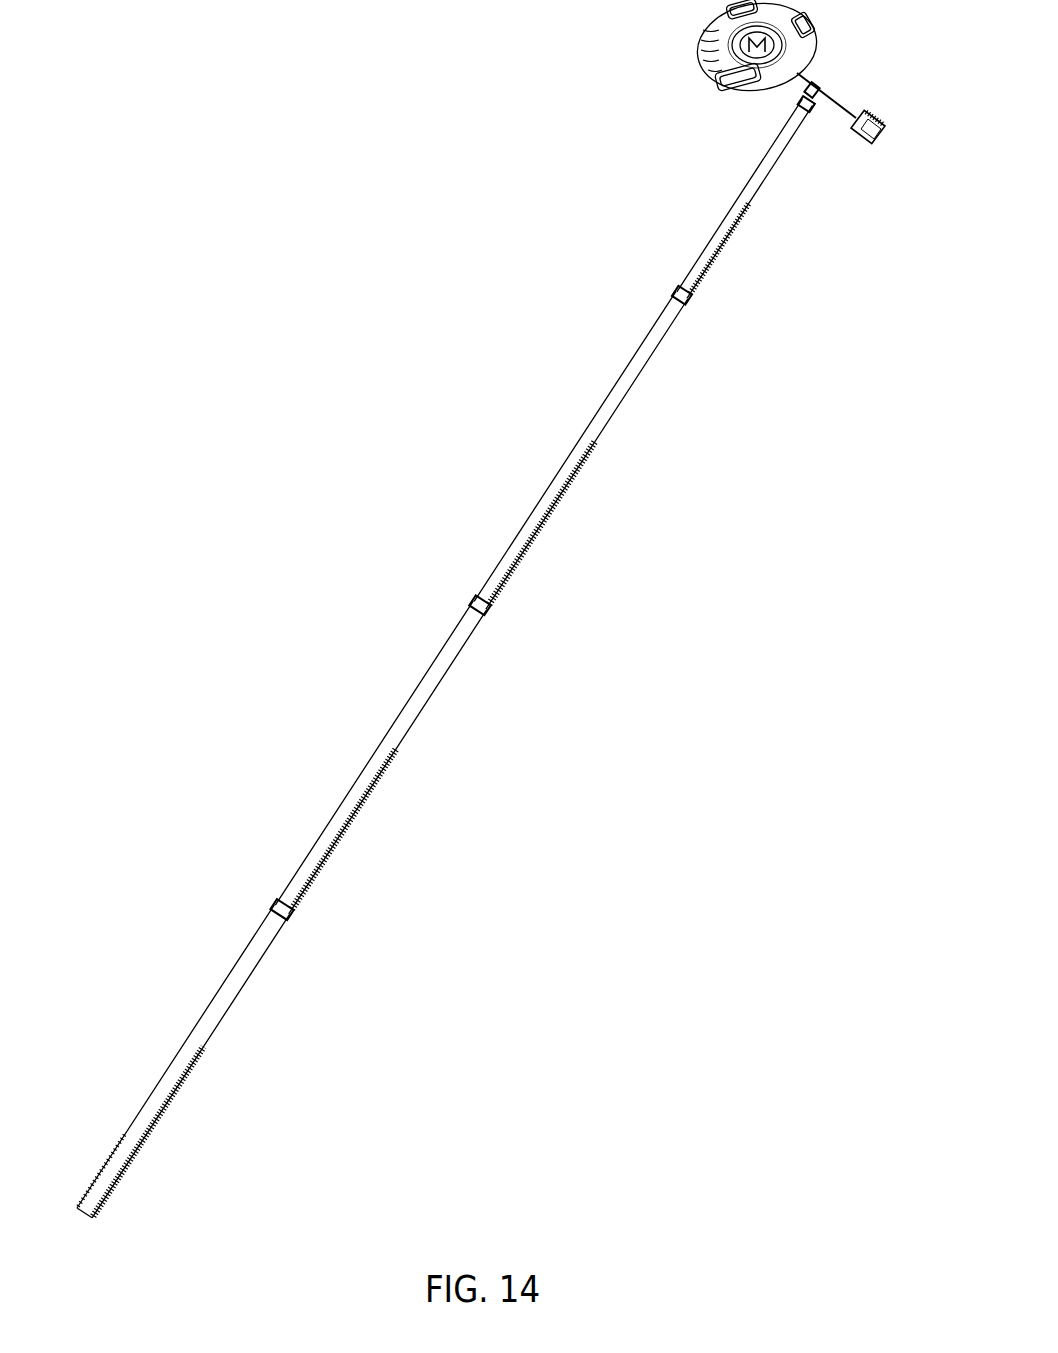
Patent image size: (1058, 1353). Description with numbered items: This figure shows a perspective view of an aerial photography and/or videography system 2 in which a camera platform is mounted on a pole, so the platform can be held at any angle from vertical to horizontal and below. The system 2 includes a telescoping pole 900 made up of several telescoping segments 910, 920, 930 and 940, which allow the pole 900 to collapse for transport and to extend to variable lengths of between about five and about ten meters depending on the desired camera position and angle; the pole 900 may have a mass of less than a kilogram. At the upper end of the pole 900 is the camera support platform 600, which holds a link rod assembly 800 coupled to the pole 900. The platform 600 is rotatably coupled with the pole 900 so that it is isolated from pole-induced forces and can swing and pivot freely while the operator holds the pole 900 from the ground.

The aerial photography and/or videography system 2 is at (471, 609).
The camera support platform 600 is at (680, 72).
The connector 800 is at (862, 160).
The telescoping pole 900 is at (448, 657).
The telescoping segment 910 is at (207, 1042).
The telescoping segment 920 is at (380, 740).
The telescoping segment 930 is at (597, 432).
The telescoping segment 940 is at (730, 207).